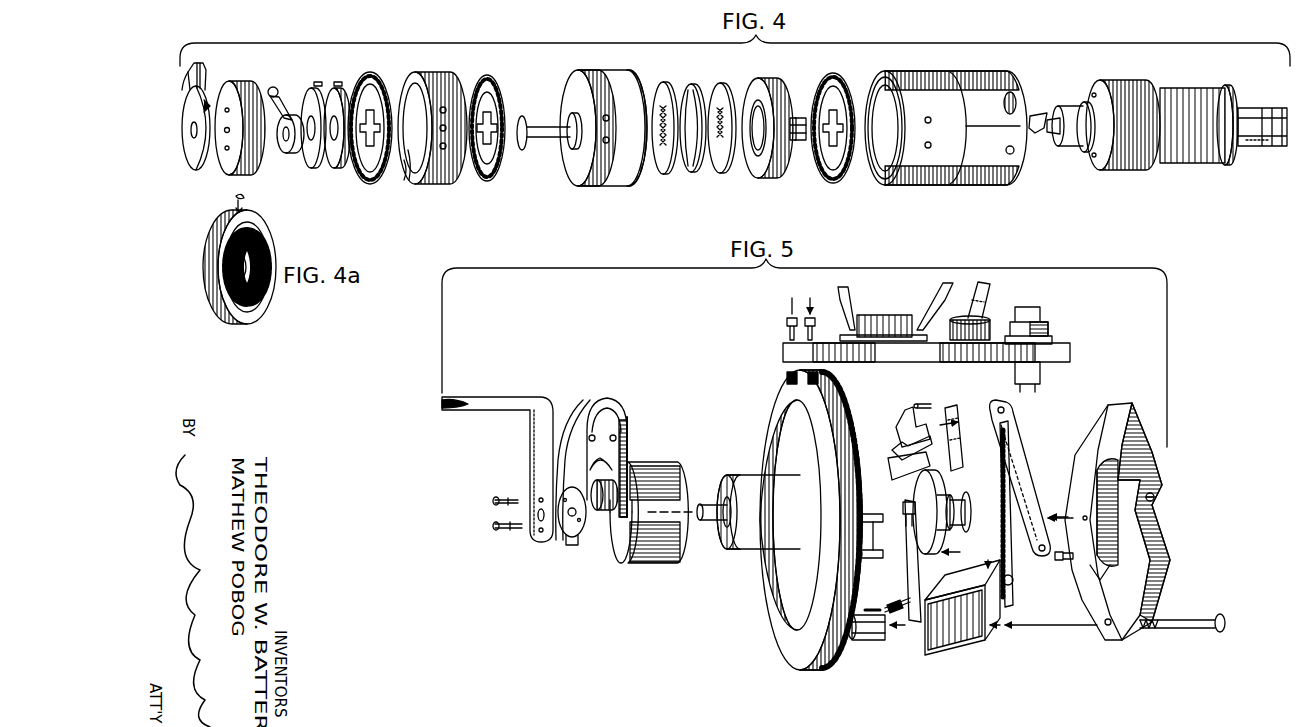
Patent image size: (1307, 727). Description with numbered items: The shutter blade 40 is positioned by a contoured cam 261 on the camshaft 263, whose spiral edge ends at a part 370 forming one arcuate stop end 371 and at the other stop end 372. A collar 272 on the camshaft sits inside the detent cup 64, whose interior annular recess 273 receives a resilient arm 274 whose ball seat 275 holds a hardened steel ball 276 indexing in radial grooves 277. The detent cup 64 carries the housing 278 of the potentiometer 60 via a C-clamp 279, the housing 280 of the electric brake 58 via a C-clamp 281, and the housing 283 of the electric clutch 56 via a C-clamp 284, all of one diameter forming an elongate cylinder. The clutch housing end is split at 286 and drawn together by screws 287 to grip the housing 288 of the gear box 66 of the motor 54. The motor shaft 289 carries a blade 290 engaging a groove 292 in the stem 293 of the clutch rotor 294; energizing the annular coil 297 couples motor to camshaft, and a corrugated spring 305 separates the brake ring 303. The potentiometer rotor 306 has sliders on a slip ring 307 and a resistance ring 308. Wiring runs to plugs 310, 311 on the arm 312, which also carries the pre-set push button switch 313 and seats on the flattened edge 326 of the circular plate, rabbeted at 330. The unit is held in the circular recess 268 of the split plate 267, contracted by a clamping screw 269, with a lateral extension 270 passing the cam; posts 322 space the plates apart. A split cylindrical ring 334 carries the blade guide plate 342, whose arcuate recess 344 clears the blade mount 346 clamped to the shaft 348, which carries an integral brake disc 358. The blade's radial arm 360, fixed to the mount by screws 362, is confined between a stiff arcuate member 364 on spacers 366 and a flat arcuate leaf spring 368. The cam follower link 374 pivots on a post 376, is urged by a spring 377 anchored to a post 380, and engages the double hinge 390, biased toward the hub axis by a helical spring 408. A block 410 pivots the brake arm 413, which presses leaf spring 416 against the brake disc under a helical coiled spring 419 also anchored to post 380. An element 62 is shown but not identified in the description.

In FIG. 5, the shutter blade 40 is at (497, 450).
In FIG. 4, the motor 54 is at (1190, 147).
In FIG. 4, the electric clutch 56 is at (864, 188).
In FIG. 4, the electric brake 58 is at (603, 116).
In FIG. 4, the potentiometer 60 is at (434, 110).
In FIG. 5, the solenoid 62 is at (972, 638).
In FIG. 4, the detent cup 64 is at (233, 78).
In FIG. 4A, the detent cup 64 is at (212, 300).
In FIG. 4, the gear box 66 is at (1135, 172).
In FIG. 4, the contoured cam 261 is at (188, 155).
In FIG. 4, the camshaft 263 is at (550, 128).
In FIG. 5, the split plate 267 is at (1160, 556).
In FIG. 5, the circular recess 268 is at (1103, 470).
In FIG. 5, the clamping screw 269 is at (1164, 497).
In FIG. 5, the lateral extension 270 is at (1090, 575).
In FIG. 4, the collar 272 is at (312, 165).
In FIG. 4A, the interior annular recess 273 is at (272, 300).
In FIG. 4, the resilient arm 274 is at (294, 118).
In FIG. 4, the ball seat 275 is at (284, 112).
In FIG. 4, the hardened steel ball 276 is at (272, 86).
In FIG. 4A, the radial grooves 277 is at (248, 323).
In FIG. 4, the potentiometer housing 278 is at (441, 184).
In FIG. 4, the C-clamp 279 is at (372, 182).
In FIG. 4, the brake housing 280 is at (607, 178).
In FIG. 4, the C-clamp 281 is at (490, 183).
In FIG. 4, the clutch housing 283 is at (922, 72).
In FIG. 4, the C-clamp 284 is at (834, 184).
In FIG. 4, the split 286 is at (1029, 118).
In FIG. 4, the screws 287 is at (1016, 96).
In FIG. 4, the gear box housing 288 is at (946, 102).
In FIG. 4, the motor shaft 289 is at (1058, 118).
In FIG. 4, the blade 290 is at (1038, 136).
In FIG. 4, the groove 292 is at (801, 118).
In FIG. 4, the stem 293 is at (796, 142).
In FIG. 4, the clutch rotor 294 is at (774, 76).
In FIG. 4, the annular coil 297 is at (722, 172).
In FIG. 4, the brake ring 303 is at (665, 170).
In FIG. 4, the corrugated spring 305 is at (691, 176).
In FIG. 4, the potentiometer rotor 306 is at (334, 168).
In FIG. 4, the slip ring 307 is at (405, 172).
In FIG. 4, the resistance ring 308 is at (410, 182).
In FIG. 5, the multiple connection plug 310 is at (887, 315).
In FIG. 5, the multiple connection plug 311 is at (986, 318).
In FIG. 5, the arm 312 is at (1072, 353).
In FIG. 5, the pre-set push button switch 313 is at (1046, 326).
In FIG. 5, the spacers or posts 322 is at (882, 645).
In FIG. 5, the flattened top edge 326 is at (790, 330).
In FIG. 5, the rabbeted edge 330 is at (762, 576).
In FIG. 5, the cylindrical ring 334 is at (678, 476).
In FIG. 5, the blade guide plate 342 is at (631, 450).
In FIG. 5, the arcuate recess 344 is at (606, 512).
In FIG. 5, the blade mount 346 is at (560, 536).
In FIG. 5, the shaft 348 is at (903, 515).
In FIG. 5, the brake disc 358 is at (920, 496).
In FIG. 5, the radial arm 360 is at (538, 448).
In FIG. 5, the screws 362 is at (496, 526).
In FIG. 5, the stiff arcuate member 364 is at (602, 432).
In FIG. 5, the spacers 366 is at (626, 428).
In FIG. 5, the flat arcuate leaf spring 368 is at (622, 398).
In FIG. 4, the cam part 370 is at (196, 62).
In FIG. 4, the arcuate stop end 371 is at (189, 75).
In FIG. 4, the stop end 372 is at (206, 107).
In FIG. 5, the cam follower link 374 is at (1028, 500).
In FIG. 5, the post 376 is at (880, 560).
In FIG. 5, the spring 377 is at (1013, 580).
In FIG. 5, the post 380 is at (856, 645).
In FIG. 5, the double hinge 390 is at (1003, 575).
In FIG. 5, the helical spring 408 is at (958, 425).
In FIG. 5, the block 410 is at (905, 425).
In FIG. 5, the brake arm 413 is at (918, 560).
In FIG. 5, the leaf spring 416 is at (895, 462).
In FIG. 5, the helical coiled spring 419 is at (893, 618).